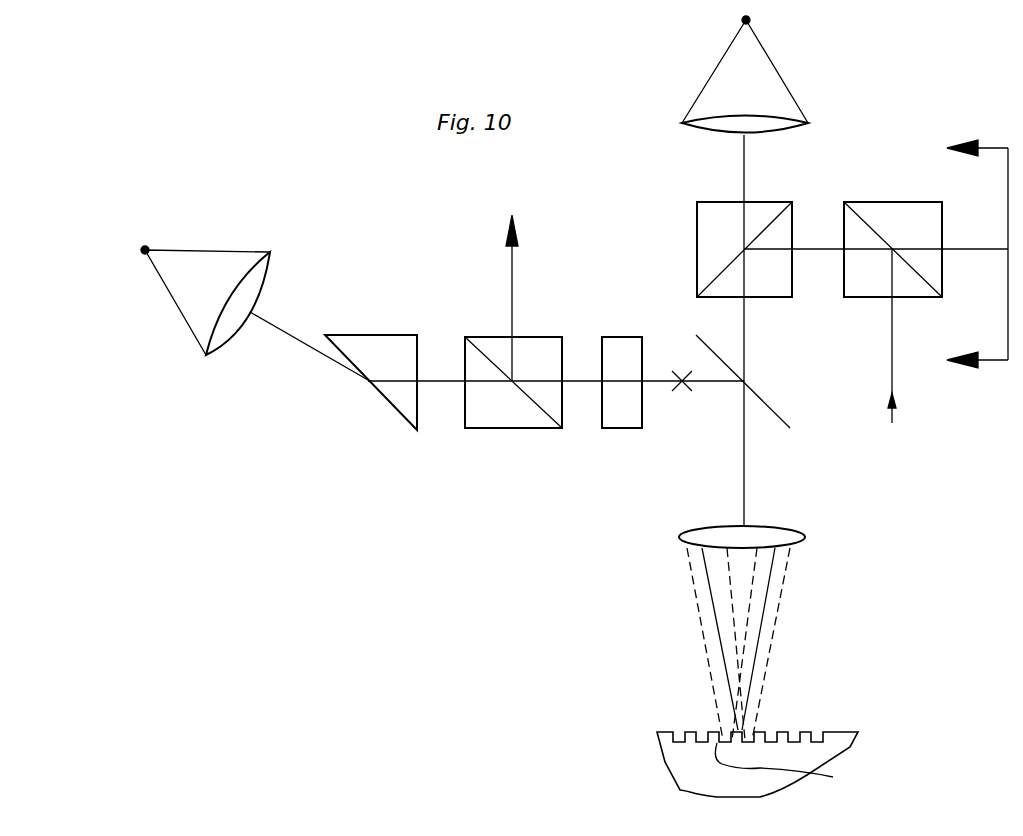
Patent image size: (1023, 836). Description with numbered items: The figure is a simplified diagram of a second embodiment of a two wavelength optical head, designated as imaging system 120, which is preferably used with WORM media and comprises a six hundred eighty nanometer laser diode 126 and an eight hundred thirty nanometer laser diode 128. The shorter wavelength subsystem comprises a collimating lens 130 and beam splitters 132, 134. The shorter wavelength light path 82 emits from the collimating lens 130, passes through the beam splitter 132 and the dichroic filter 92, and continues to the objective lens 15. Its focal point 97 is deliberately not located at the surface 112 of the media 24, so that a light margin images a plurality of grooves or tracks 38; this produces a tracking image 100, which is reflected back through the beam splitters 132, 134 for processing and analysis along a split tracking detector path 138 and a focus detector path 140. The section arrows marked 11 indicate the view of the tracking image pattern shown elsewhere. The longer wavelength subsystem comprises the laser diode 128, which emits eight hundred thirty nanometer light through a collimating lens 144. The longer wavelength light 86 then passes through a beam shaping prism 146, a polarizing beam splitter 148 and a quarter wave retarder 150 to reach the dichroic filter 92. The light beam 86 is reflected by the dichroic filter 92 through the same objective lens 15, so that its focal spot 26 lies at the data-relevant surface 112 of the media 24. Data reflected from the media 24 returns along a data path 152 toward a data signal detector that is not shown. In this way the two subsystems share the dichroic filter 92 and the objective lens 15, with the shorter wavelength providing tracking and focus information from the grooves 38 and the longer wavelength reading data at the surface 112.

The imaging system 120 is at (630, 190).
The laser diode 126 is at (742, 22).
The collimating lens 130 is at (736, 136).
The shorter wavelength light path 82 is at (744, 170).
The beam splitter 132 is at (697, 232).
The tracking image 100 is at (826, 249).
The split tracking detector path 138 is at (990, 252).
The beam splitter 134 is at (866, 297).
The focus detector path 140 is at (890, 375).
The section arrows 11 is at (964, 254).
The dichroic filter 92 is at (758, 392).
The longer wavelength light 86 is at (333, 365).
The polarizing beam splitter 148 is at (485, 418).
The data path 152 is at (512, 298).
The 1/4 wave retarder 150 is at (620, 337).
The beam shaping prism 146 is at (355, 335).
The laser diode 128 is at (150, 248).
The collimating lens 144 is at (216, 340).
The objective lens 15 is at (783, 532).
The focal point 97 is at (742, 655).
The focal spot 26 is at (713, 685).
The grooves or tracks 38 is at (684, 718).
The media 24 is at (837, 745).
The surface 112 is at (833, 777).